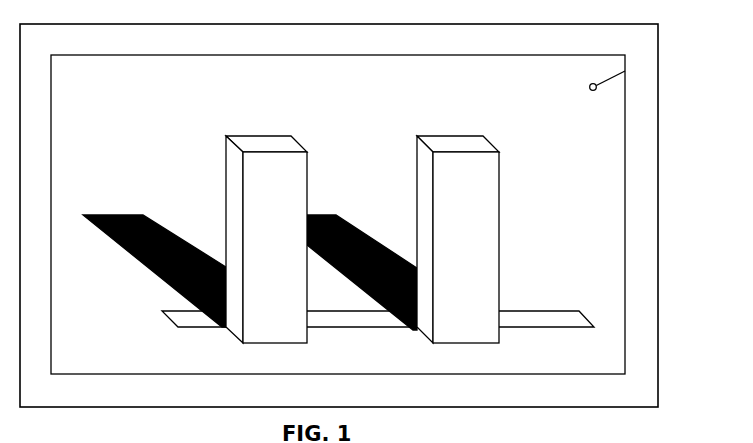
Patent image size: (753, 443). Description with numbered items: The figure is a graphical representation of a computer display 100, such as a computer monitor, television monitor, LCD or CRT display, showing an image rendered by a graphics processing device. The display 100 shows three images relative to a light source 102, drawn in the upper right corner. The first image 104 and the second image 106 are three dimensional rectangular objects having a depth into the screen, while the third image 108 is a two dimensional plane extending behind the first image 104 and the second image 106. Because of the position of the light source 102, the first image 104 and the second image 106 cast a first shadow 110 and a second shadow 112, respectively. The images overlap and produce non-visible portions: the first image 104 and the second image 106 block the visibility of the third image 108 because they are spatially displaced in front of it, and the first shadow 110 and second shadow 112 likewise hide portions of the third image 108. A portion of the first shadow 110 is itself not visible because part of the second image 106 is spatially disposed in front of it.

The computer display 100 is at (655, 247).
The light source 102 is at (605, 88).
The first image 104 is at (498, 255).
The second image 106 is at (307, 165).
The third image 108 is at (500, 328).
The first shadow 110 is at (341, 215).
The second shadow 112 is at (149, 214).